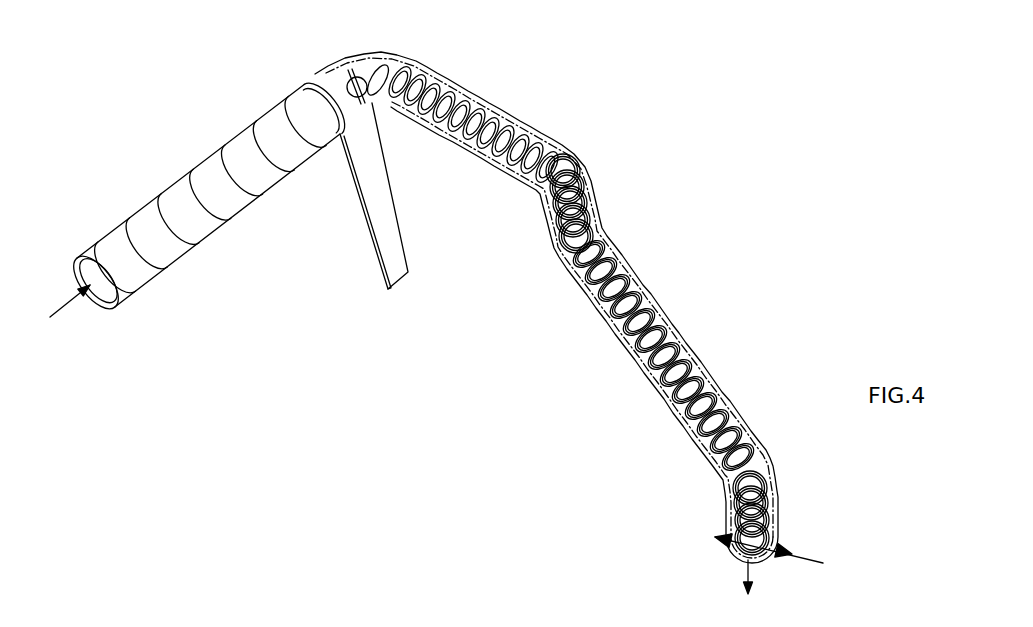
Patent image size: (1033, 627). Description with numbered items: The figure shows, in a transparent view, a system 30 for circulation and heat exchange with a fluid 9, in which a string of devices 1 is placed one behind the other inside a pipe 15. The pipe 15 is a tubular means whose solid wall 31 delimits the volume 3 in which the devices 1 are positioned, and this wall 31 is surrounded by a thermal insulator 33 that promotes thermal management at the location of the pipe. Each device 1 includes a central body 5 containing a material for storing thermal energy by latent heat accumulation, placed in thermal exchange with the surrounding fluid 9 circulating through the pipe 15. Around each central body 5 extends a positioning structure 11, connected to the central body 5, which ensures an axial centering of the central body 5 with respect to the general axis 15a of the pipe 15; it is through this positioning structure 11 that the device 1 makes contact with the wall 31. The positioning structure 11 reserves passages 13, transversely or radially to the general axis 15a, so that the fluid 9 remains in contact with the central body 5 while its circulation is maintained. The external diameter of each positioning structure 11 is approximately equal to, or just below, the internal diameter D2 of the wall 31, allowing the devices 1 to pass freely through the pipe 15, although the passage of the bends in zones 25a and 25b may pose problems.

The device 1 is at (571, 311).
The volume 3 is at (762, 556).
The central body 5 is at (777, 504).
The surrounding fluid 9 is at (77, 295).
The positioning structure 11 is at (588, 172).
The passages 13 is at (598, 230).
The pipe 15 is at (737, 553).
The general axis 15a is at (598, 232).
The bend zone 25a is at (382, 43).
The bend zone 25b is at (586, 156).
The system 30 is at (512, 102).
The wall 31 is at (760, 440).
The thermal insulator 33 is at (195, 203).
The internal diameter D2 is at (771, 548).